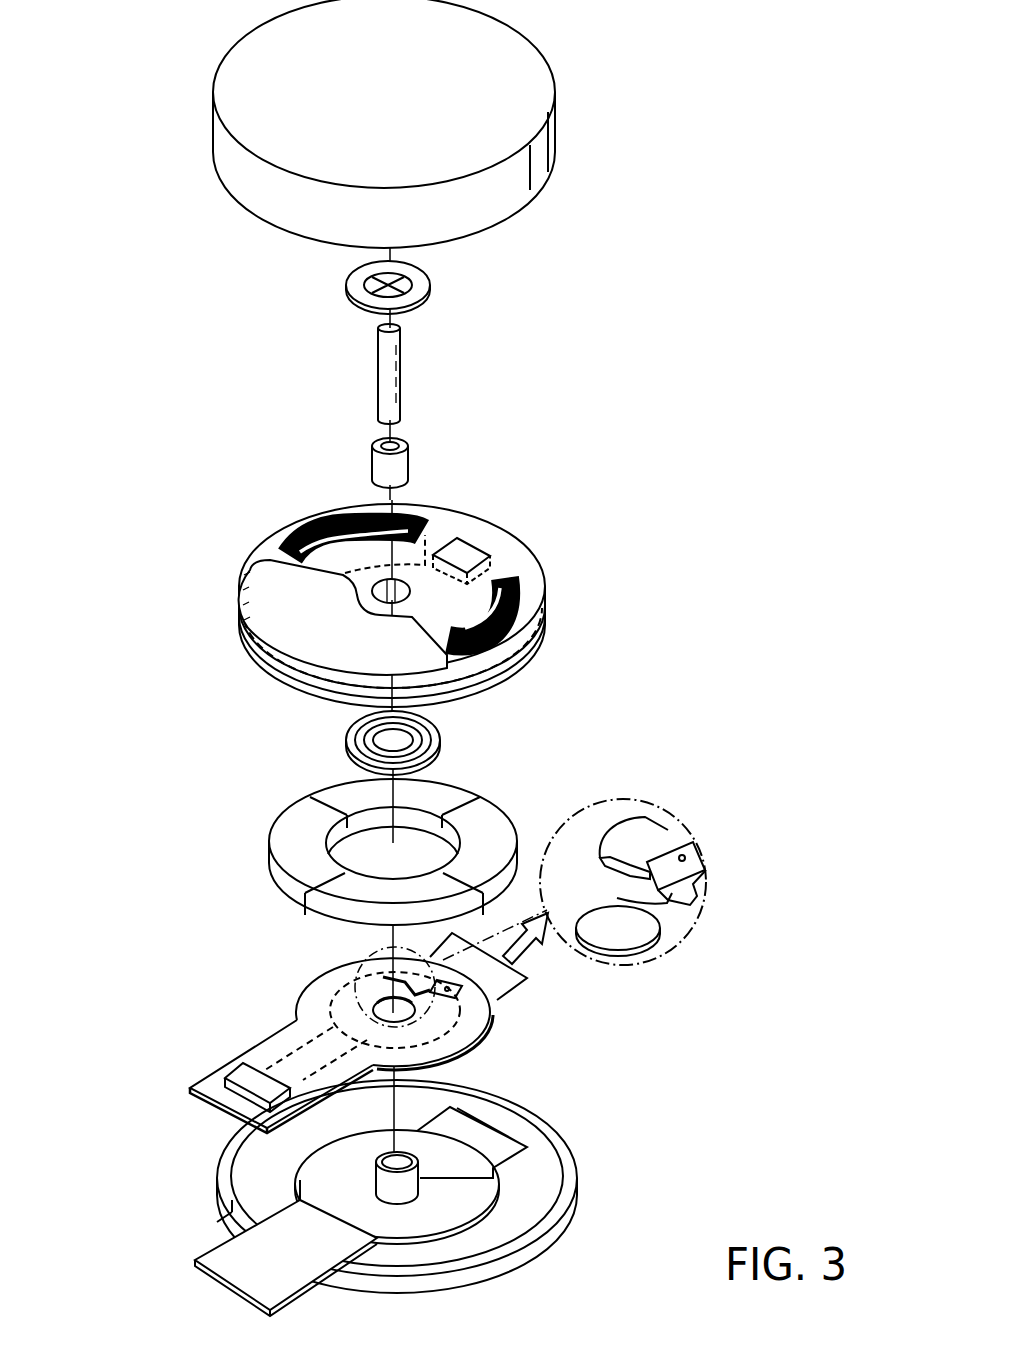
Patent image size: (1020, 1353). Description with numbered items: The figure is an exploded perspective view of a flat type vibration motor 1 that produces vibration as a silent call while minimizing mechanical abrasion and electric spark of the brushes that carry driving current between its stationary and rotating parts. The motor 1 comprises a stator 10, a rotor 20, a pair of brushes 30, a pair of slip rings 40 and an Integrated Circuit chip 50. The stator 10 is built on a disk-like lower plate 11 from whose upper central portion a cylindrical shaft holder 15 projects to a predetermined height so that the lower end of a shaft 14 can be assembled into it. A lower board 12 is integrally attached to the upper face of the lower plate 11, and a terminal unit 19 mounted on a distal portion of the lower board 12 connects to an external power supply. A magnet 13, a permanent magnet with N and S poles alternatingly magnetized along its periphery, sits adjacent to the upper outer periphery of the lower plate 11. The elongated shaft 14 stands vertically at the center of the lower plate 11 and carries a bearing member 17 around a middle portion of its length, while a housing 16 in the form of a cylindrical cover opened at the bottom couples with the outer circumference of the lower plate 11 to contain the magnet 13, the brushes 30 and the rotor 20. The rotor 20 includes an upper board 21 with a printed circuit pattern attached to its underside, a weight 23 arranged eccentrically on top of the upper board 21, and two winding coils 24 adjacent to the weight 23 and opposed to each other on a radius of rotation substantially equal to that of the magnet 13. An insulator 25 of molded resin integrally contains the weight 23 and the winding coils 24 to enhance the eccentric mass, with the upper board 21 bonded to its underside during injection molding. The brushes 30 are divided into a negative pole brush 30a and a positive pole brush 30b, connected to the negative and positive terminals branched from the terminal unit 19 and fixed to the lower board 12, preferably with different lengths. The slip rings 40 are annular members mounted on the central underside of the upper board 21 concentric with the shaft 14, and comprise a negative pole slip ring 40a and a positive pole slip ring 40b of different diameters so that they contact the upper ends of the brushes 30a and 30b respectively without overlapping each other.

The flat type vibration motor 1 is at (665, 88).
The stator 10 is at (388, 1198).
The lower plate 11 is at (545, 1240).
The lower board 12 is at (470, 1020).
The magnet 13 is at (297, 818).
The shaft 14 is at (400, 367).
The shaft holder 15 is at (528, 1140).
The housing 16 is at (538, 177).
The bearing member 17 is at (373, 468).
The terminal unit 19 is at (243, 1070).
The rotor 20 is at (351, 579).
The upper board 21 is at (495, 677).
The weight 23 is at (268, 593).
The winding coils 24 is at (523, 587).
The insulator 25 is at (472, 530).
The brushes 30 is at (626, 860).
The negative pole brush 30a is at (645, 815).
The positive pole brush 30b is at (680, 910).
The slip rings 40 is at (444, 741).
The negative pole slip ring 40a is at (435, 727).
The positive pole slip ring 40b is at (437, 740).
The Integrated Circuit (IC) chip 50 is at (487, 540).